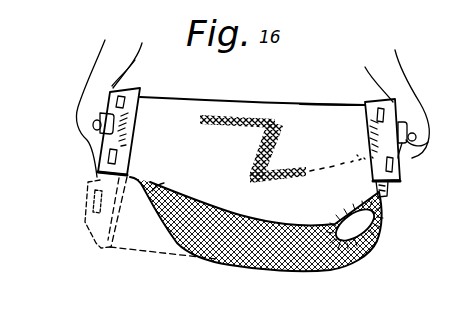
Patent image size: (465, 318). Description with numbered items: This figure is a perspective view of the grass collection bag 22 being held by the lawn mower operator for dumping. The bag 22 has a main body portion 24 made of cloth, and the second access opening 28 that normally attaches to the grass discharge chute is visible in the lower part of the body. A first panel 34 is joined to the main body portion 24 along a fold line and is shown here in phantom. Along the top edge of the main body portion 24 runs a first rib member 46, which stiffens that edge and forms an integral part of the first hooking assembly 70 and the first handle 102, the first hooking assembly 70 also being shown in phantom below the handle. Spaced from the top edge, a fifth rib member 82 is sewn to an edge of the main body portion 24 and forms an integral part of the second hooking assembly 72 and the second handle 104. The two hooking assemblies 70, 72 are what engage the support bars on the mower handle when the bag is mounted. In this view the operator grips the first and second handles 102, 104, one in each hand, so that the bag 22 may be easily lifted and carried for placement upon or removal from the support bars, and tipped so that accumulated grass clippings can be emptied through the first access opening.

The grass collection bag 22 is at (205, 262).
The main body portion 24 is at (264, 110).
The second access opening 28 is at (352, 230).
The first panel 34 is at (137, 235).
The first rib member 46 is at (140, 100).
The first hooking assembly 70 is at (78, 206).
The second hooking assembly 72 is at (398, 188).
The fifth rib member 82 is at (352, 103).
The first handle 102 is at (102, 147).
The second handle 104 is at (398, 158).